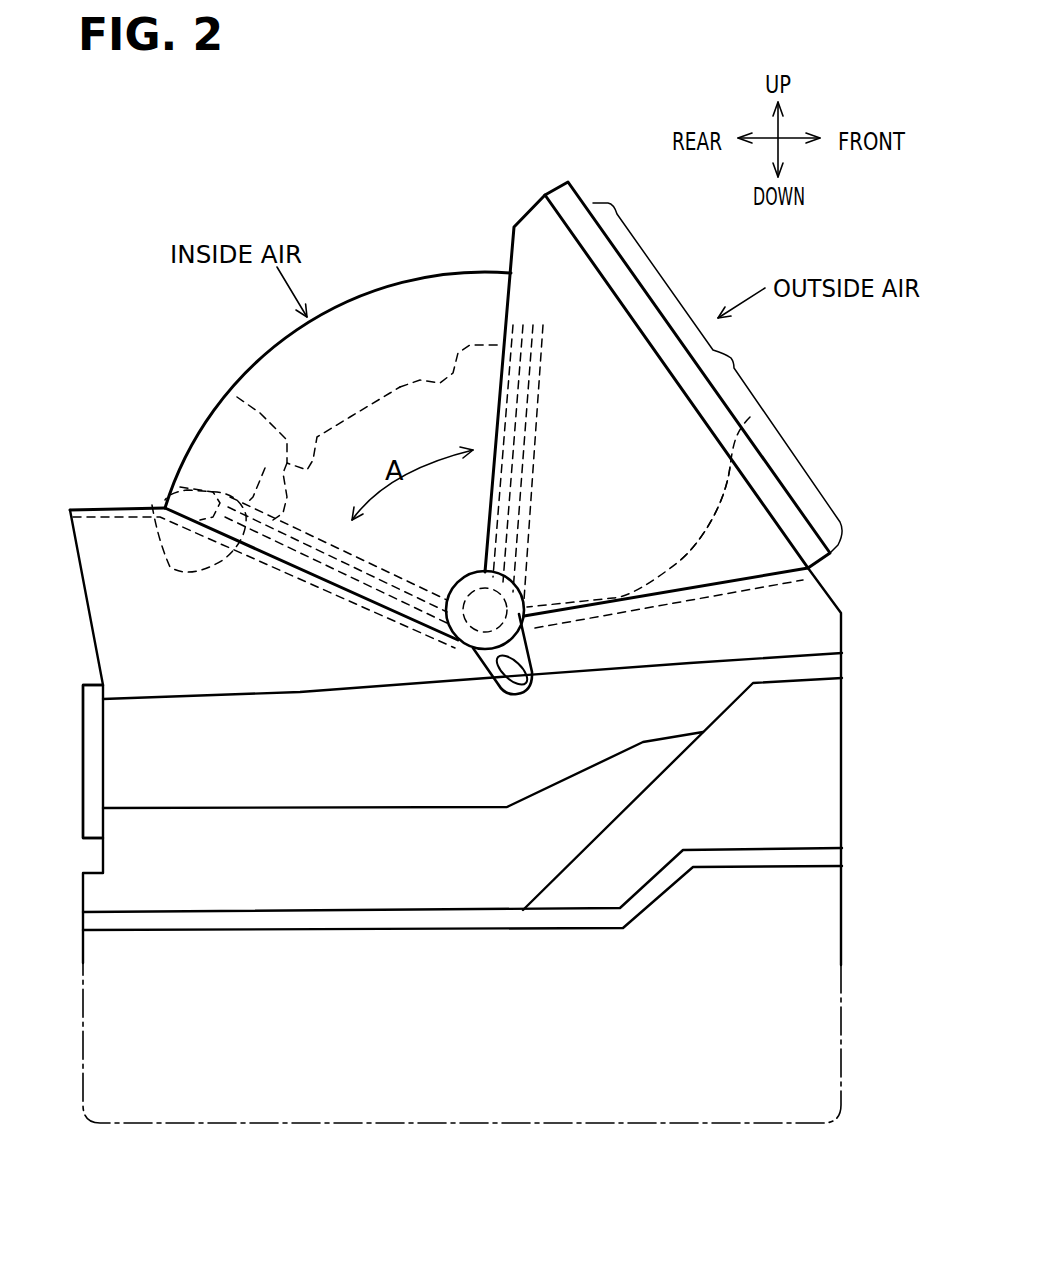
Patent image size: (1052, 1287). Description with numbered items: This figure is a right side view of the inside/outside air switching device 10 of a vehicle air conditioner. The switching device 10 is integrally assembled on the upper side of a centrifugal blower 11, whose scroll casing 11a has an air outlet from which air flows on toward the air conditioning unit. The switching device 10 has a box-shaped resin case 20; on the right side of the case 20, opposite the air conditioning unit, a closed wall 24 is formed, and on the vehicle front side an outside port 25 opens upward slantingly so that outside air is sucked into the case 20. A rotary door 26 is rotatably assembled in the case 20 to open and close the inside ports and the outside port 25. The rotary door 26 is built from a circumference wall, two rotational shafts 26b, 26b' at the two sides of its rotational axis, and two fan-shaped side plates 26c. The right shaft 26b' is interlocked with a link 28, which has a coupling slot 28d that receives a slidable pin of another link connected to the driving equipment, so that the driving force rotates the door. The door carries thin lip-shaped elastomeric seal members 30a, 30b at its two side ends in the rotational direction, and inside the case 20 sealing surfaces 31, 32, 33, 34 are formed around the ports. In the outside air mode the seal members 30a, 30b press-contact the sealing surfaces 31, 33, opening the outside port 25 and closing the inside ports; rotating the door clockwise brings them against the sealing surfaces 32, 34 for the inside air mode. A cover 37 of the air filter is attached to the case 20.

The inside/outside air switching device 10 is at (482, 265).
The centrifugal blower 11 is at (522, 1058).
The scroll casing 11a is at (498, 1123).
The case 20 is at (607, 713).
The closed wall 24 is at (347, 327).
The outside port 25 is at (715, 342).
The rotary door 26 is at (393, 417).
The rotational shaft 26b is at (714, 485).
The right shaft 26b' is at (789, 463).
The side plate 26c is at (237, 397).
The link 28 is at (476, 650).
The coupling slot 28d is at (512, 695).
The seal member 30a is at (165, 495).
The seal member 30b is at (513, 325).
The sealing surface 31 is at (157, 540).
The sealing surface 32 is at (503, 322).
The sealing surface 33 is at (515, 297).
The sealing surface 34 is at (745, 572).
The cover 37 is at (83, 775).